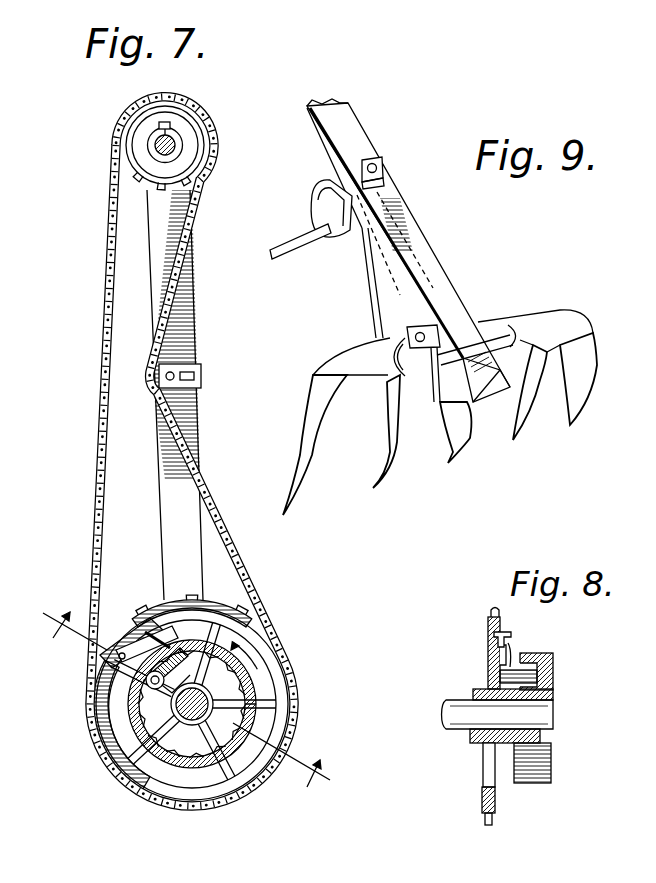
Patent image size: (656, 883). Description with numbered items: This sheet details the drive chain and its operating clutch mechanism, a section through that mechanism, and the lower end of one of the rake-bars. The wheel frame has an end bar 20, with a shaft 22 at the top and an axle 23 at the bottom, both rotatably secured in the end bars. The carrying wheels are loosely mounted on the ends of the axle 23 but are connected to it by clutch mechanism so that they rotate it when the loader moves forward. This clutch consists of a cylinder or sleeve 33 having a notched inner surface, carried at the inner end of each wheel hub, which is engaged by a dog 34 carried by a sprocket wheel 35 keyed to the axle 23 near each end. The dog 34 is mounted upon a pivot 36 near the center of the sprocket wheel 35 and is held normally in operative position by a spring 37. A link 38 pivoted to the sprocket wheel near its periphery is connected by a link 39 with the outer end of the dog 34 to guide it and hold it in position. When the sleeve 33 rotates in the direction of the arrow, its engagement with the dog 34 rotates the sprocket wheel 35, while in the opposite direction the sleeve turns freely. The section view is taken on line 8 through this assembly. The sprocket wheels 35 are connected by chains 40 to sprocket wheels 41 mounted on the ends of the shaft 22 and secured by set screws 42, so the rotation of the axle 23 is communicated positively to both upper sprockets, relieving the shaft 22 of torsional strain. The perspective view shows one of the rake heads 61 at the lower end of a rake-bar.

In FIG. 7, the sprocket wheel 41 is at (117, 138).
In FIG. 7, the set screw 42 is at (172, 127).
In FIG. 7, the shaft 22 is at (175, 143).
In FIG. 7, the end bar 20 is at (182, 330).
In FIG. 7, the chain 40 is at (96, 470).
In FIG. 7, the link 39 is at (167, 640).
In FIG. 8, the link 39 is at (500, 658).
In FIG. 7, the link 38 is at (135, 630).
In FIG. 8, the link 38 is at (553, 673).
In FIG. 7, the spring 37 is at (153, 660).
In FIG. 7, the section line 8 is at (184, 704).
In FIG. 7, the dog 34 is at (180, 668).
In FIG. 8, the dog 34 is at (525, 653).
In FIG. 7, the sprocket wheel 35 is at (90, 688).
In FIG. 8, the sprocket wheel 35 is at (483, 763).
In FIG. 7, the pivot 36 is at (155, 689).
In FIG. 8, the pivot 36 is at (488, 631).
In FIG. 7, the sleeve 33 is at (130, 717).
In FIG. 8, the sleeve 33 is at (535, 657).
In FIG. 7, the axle 23 is at (190, 716).
In FIG. 8, the axle 23 is at (555, 712).
In FIG. 9, the rake head 61 is at (530, 317).